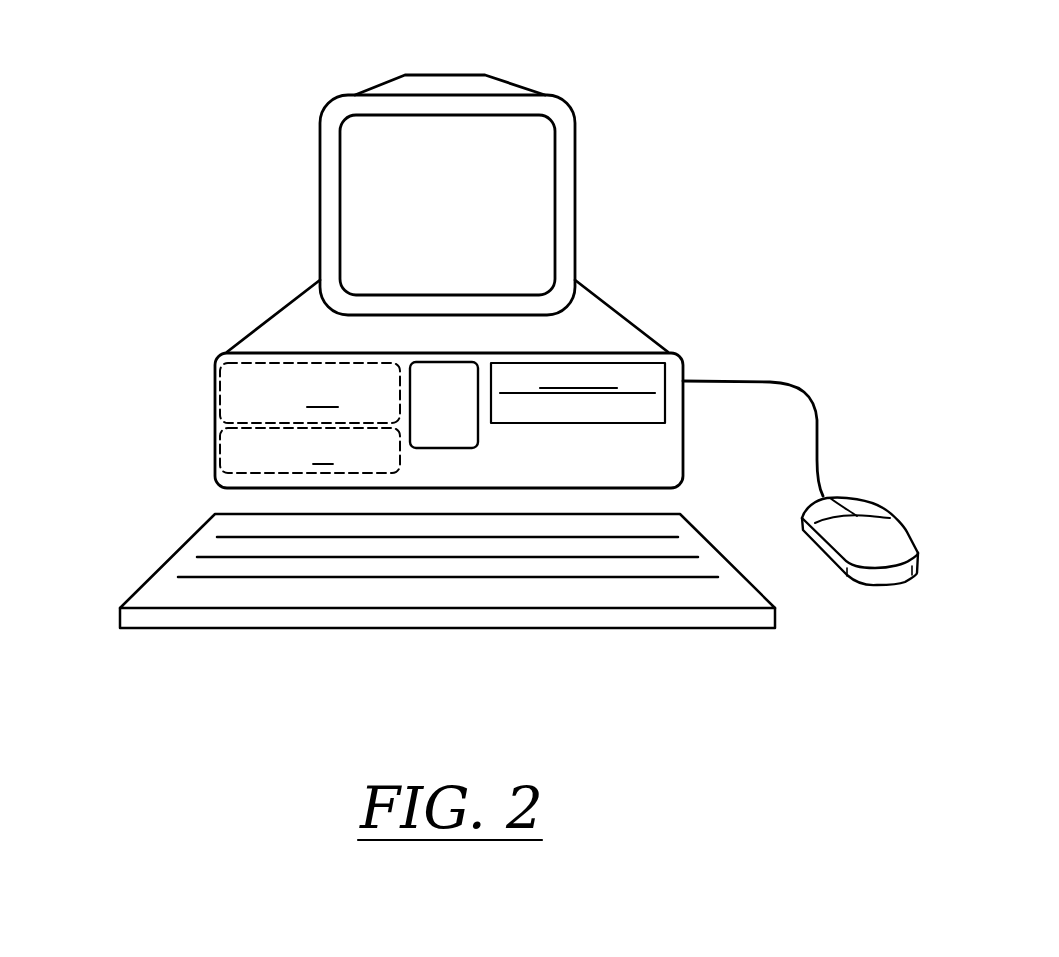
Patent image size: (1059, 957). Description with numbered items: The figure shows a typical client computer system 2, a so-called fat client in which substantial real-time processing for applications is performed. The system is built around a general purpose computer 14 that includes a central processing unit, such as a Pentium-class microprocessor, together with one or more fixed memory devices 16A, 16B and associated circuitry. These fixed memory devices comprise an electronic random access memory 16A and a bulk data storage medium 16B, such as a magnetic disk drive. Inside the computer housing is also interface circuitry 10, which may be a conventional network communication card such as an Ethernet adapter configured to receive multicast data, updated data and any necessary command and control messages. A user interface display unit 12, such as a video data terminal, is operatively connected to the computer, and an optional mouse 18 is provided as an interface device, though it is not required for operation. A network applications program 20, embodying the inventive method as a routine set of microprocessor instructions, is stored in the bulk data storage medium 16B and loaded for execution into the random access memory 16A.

The client computer system 2 is at (266, 155).
The interface circuitry 10 is at (455, 445).
The user interface display unit 12 is at (577, 215).
The general purpose computer 14 is at (607, 300).
The electronic random access memory 16A is at (230, 408).
The bulk data storage medium 16B is at (247, 462).
The mouse 18 is at (892, 530).
The network applications program 20 is at (327, 418).